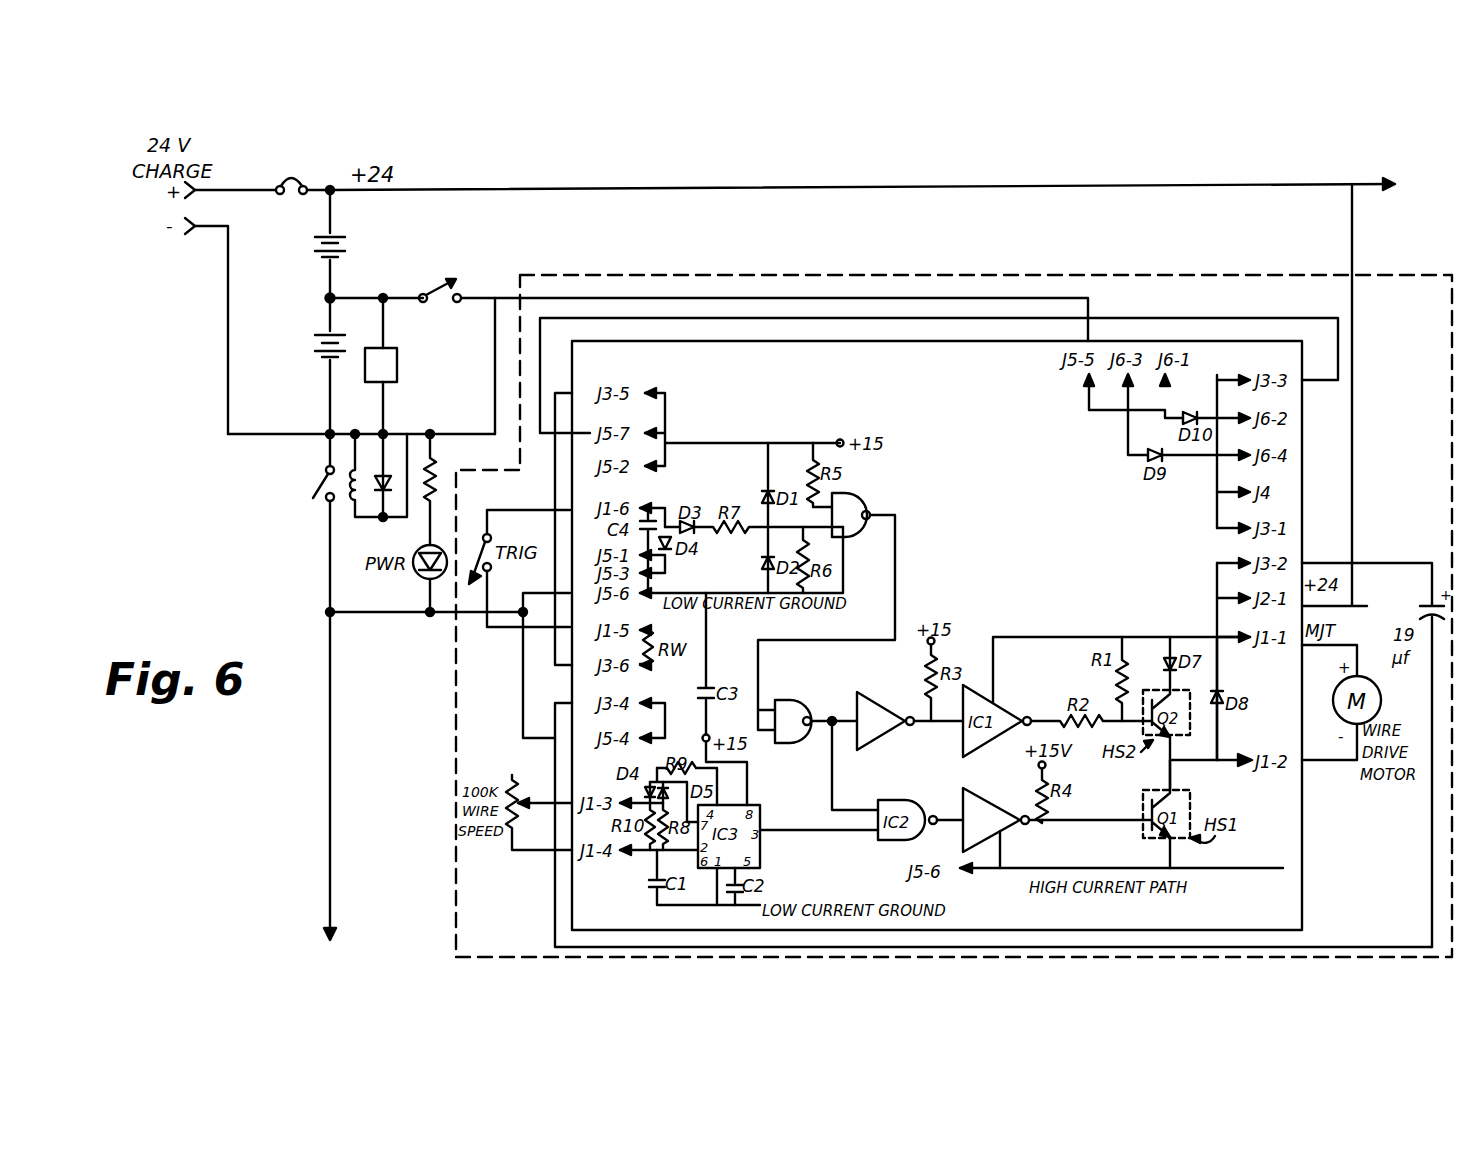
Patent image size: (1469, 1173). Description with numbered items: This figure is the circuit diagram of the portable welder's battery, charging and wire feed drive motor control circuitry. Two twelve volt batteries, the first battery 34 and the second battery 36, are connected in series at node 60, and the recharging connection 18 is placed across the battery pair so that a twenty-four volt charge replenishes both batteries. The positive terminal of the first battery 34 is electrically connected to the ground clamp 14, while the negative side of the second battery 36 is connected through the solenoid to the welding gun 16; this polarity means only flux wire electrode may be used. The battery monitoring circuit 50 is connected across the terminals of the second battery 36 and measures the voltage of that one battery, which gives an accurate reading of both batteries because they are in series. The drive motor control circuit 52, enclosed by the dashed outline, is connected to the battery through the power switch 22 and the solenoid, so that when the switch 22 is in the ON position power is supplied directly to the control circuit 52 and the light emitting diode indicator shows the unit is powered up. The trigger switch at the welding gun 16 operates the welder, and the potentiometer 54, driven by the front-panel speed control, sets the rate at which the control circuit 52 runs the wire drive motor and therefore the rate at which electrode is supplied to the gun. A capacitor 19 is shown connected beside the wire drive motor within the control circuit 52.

The ground clamp 14 is at (1420, 168).
The welding gun 16 is at (298, 950).
The recharging connection 18 is at (235, 190).
The capacitor 19 is at (1373, 755).
The power switch 22 is at (425, 293).
The first battery 34 is at (340, 240).
The second 12V battery 36 is at (312, 337).
The battery monitoring circuit 50 is at (386, 384).
The drive motor control circuit 52 is at (1452, 512).
The potentiometer 54 is at (528, 855).
The node 60 is at (340, 298).